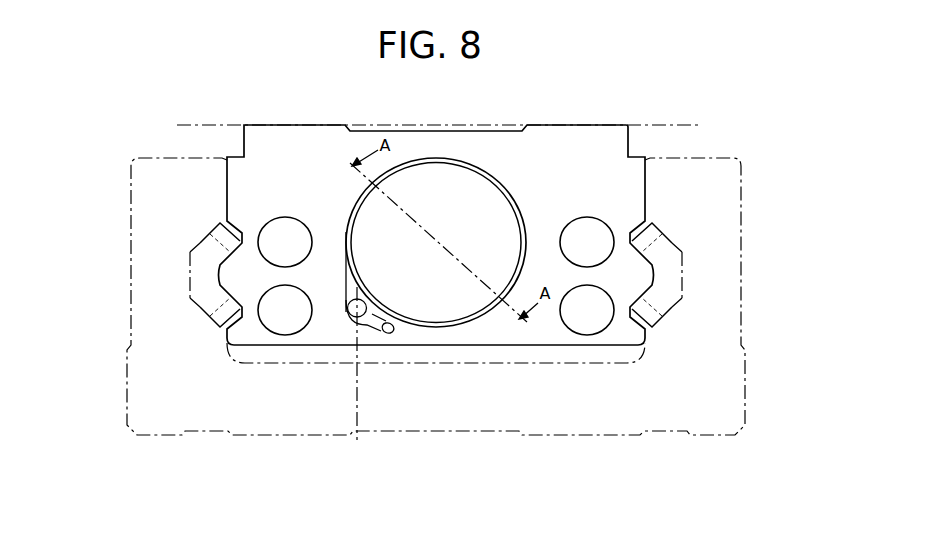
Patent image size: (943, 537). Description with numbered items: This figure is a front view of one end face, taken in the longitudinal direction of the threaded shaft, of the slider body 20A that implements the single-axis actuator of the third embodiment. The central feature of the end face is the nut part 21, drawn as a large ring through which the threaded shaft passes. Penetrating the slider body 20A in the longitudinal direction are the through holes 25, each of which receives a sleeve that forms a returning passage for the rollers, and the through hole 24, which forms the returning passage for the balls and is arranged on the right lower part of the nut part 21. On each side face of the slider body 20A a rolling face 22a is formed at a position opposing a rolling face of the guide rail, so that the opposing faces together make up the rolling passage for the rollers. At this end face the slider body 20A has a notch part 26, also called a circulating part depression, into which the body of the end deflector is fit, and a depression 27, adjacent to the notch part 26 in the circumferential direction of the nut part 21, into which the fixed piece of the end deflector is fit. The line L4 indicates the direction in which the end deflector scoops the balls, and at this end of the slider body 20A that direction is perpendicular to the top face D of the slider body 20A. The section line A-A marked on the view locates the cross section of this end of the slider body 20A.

The slider body 20A is at (305, 124).
The nut part 21 is at (500, 184).
The rolling face 22a is at (200, 243).
The through hole 24 is at (350, 320).
The through hole 25 is at (262, 233).
The notch part 26 is at (345, 312).
The depression 27 is at (388, 333).
The top face D is at (676, 124).
The line L4 is at (358, 413).